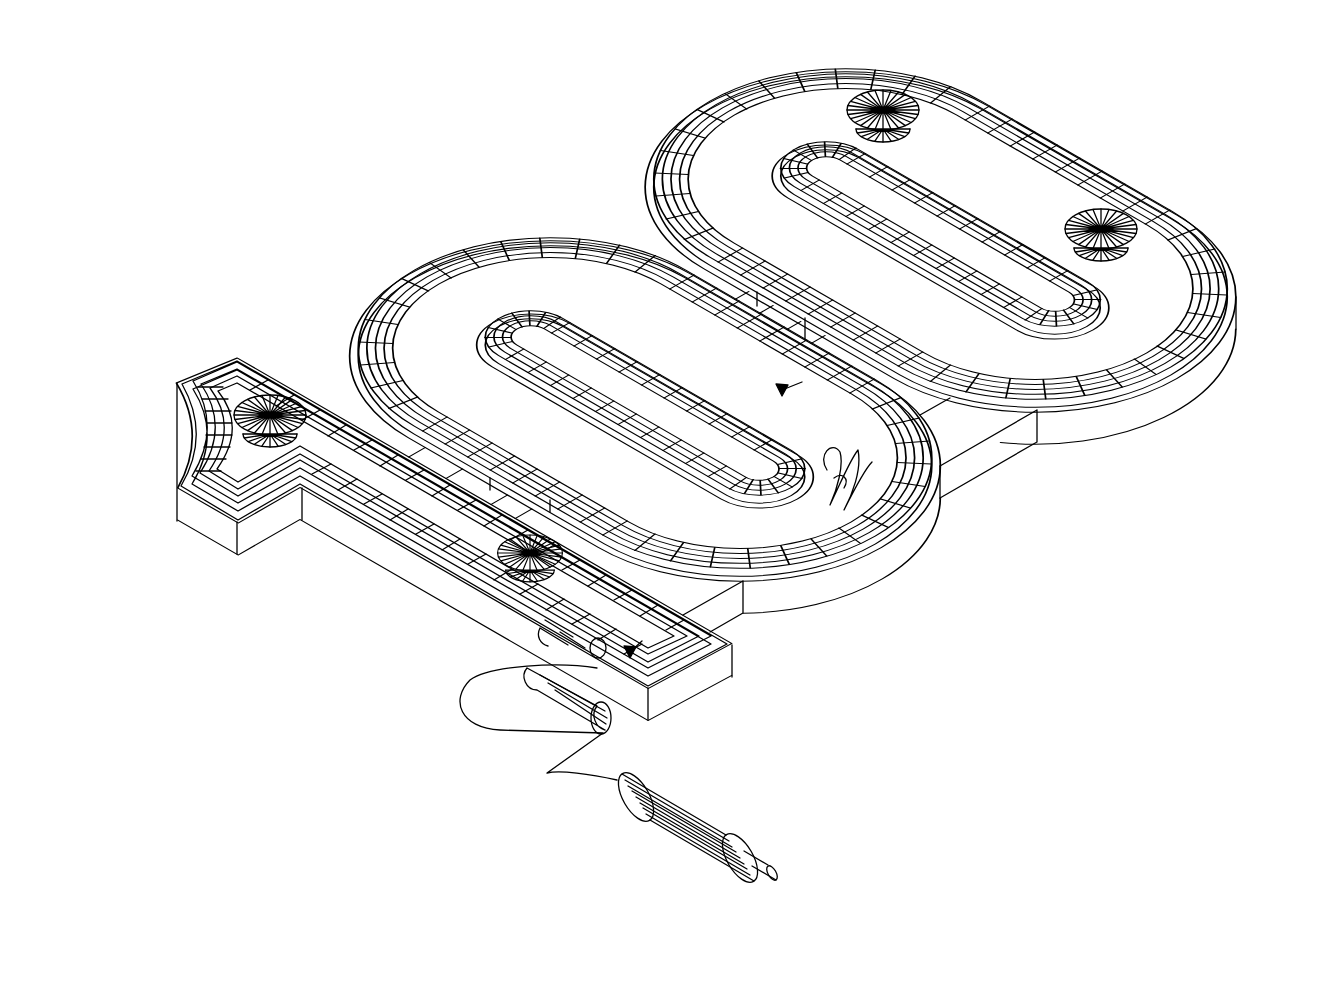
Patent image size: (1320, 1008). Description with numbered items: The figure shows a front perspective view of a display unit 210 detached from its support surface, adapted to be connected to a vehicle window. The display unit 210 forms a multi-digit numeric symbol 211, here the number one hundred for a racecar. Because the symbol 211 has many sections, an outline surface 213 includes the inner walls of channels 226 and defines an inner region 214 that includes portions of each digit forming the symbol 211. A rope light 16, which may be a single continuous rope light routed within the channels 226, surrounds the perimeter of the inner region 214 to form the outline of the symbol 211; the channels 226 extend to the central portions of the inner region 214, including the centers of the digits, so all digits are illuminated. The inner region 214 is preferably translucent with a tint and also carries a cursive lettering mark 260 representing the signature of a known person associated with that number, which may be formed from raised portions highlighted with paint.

The display unit 210 is at (395, 238).
The outline surface 213 is at (1153, 377).
The inner region 214 is at (778, 227).
The channels 226 is at (605, 252).
The rope light 16 is at (1045, 152).
The multi-digit numeric symbol 211 is at (930, 410).
The cursive lettering mark 260 is at (870, 490).